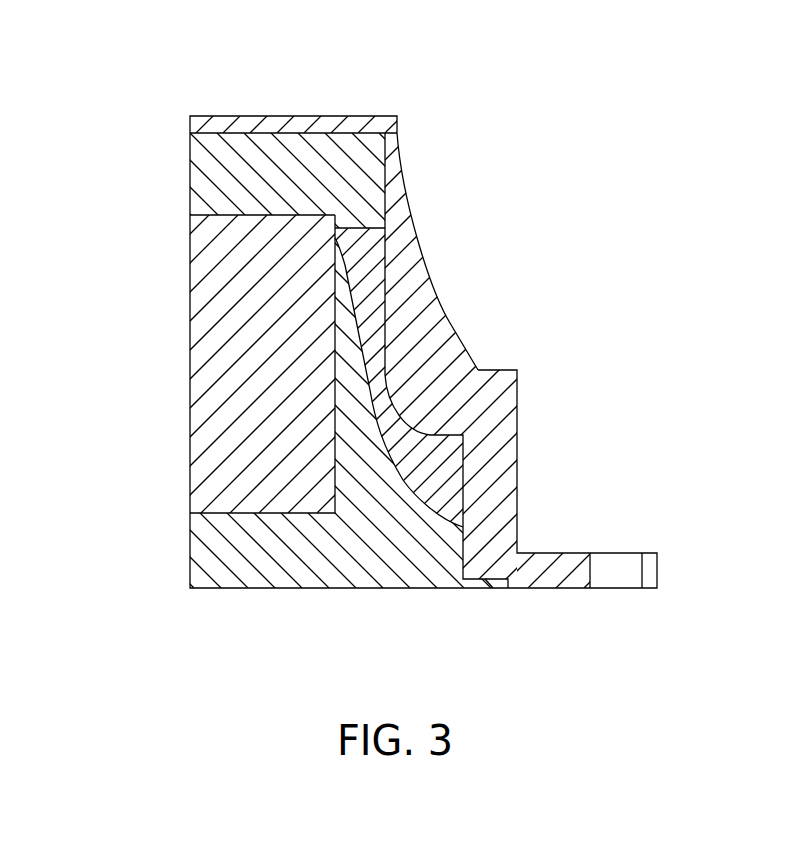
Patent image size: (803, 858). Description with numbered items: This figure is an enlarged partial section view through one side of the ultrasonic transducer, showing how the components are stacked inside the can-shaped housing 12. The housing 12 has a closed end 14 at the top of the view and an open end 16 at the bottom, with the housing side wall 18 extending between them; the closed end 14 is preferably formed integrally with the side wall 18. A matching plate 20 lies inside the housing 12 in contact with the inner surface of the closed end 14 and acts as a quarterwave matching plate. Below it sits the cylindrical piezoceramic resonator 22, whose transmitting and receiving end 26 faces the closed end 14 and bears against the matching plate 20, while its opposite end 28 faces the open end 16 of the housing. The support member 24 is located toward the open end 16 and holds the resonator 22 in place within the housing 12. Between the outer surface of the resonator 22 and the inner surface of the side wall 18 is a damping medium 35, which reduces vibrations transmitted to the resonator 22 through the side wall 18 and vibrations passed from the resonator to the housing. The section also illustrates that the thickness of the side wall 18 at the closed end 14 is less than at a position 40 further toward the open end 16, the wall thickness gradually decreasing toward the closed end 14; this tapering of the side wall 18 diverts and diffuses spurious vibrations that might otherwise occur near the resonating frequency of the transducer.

The housing 12 is at (527, 423).
The closed end 14 is at (213, 115).
The open end 16 is at (499, 593).
The housing side wall 18 is at (435, 318).
The matching plate 20 is at (197, 165).
The resonator 22 is at (200, 345).
The support member 24 is at (393, 582).
The transmitting and receiving end 26 is at (207, 213).
The opposite end 28 is at (207, 515).
The damping medium 35 is at (370, 247).
The position 40 is at (418, 183).